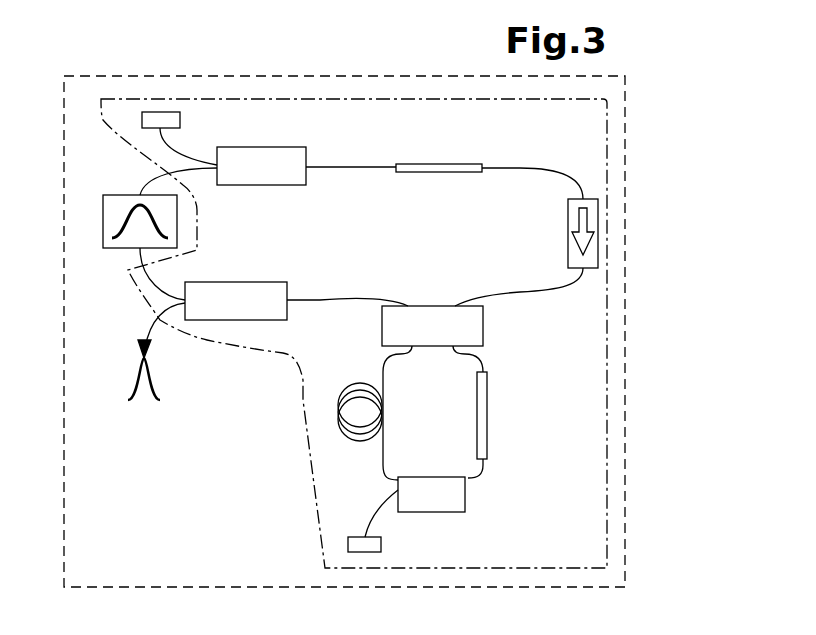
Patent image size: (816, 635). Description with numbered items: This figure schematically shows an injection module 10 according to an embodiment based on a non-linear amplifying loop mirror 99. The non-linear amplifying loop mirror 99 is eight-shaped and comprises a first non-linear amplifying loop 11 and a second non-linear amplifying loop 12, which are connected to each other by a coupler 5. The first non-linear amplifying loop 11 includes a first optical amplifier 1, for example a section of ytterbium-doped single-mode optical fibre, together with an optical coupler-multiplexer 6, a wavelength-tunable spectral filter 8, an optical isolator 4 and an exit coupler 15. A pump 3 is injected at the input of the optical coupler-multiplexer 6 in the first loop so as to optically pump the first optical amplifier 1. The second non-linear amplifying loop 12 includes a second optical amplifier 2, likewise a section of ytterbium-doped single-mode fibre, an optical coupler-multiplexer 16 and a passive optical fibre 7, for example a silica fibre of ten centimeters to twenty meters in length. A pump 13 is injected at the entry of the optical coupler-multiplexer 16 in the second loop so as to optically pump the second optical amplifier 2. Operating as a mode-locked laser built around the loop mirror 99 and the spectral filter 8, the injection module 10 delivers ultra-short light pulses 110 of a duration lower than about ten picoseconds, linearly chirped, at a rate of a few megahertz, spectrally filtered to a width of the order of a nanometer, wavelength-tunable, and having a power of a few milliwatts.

The first optical amplifier 1 is at (443, 164).
The second optical amplifier 2 is at (487, 400).
The pump 3 is at (180, 120).
The optical isolator 4 is at (568, 252).
The coupler 5 is at (432, 312).
The optical coupler-multiplexer 6 is at (270, 185).
The passive optical fibre 7 is at (338, 397).
The wavelength-tunable spectral filter 8 is at (103, 222).
The injection module 10 is at (625, 138).
The first non-linear amplifying loop 11 is at (533, 172).
The second non-linear amplifying loop 12 is at (482, 466).
The pump 13 is at (362, 537).
The exit coupler 15 is at (235, 282).
The optical coupler-multiplexer 16 is at (447, 512).
The non-linear amplifying loop mirror 99 is at (313, 463).
The ultra-short light pulses 110 is at (150, 375).